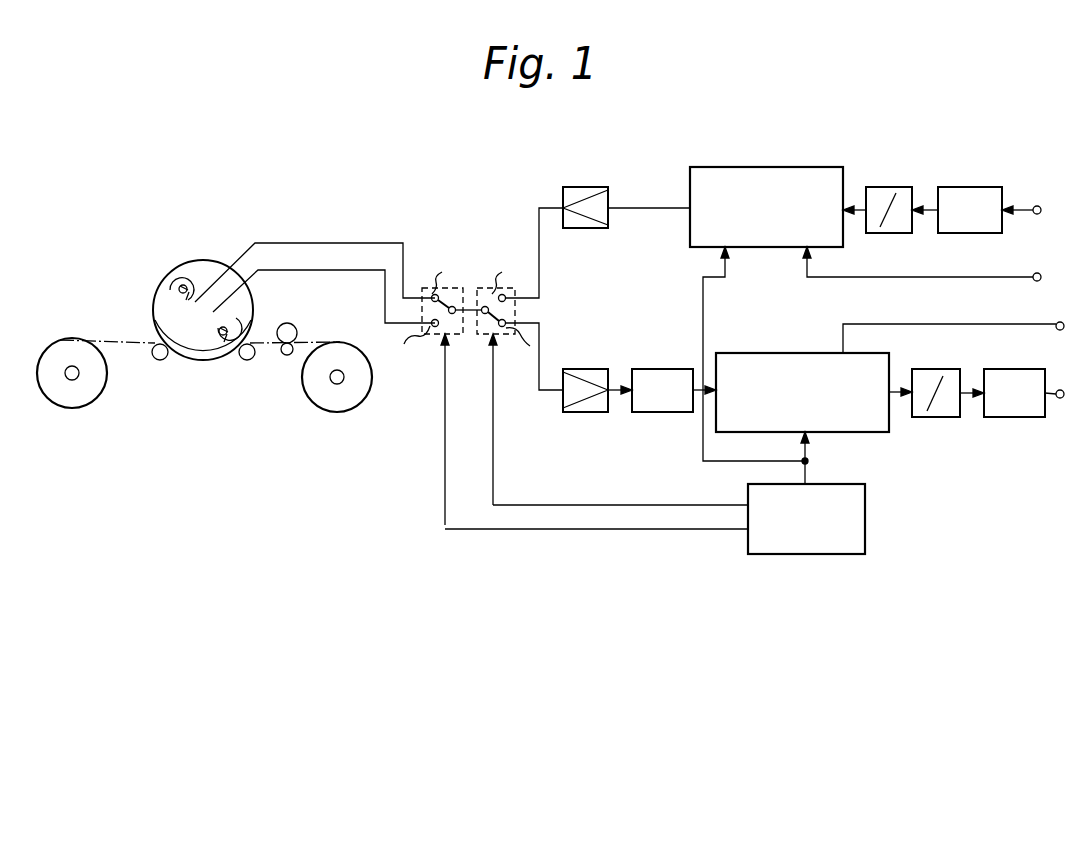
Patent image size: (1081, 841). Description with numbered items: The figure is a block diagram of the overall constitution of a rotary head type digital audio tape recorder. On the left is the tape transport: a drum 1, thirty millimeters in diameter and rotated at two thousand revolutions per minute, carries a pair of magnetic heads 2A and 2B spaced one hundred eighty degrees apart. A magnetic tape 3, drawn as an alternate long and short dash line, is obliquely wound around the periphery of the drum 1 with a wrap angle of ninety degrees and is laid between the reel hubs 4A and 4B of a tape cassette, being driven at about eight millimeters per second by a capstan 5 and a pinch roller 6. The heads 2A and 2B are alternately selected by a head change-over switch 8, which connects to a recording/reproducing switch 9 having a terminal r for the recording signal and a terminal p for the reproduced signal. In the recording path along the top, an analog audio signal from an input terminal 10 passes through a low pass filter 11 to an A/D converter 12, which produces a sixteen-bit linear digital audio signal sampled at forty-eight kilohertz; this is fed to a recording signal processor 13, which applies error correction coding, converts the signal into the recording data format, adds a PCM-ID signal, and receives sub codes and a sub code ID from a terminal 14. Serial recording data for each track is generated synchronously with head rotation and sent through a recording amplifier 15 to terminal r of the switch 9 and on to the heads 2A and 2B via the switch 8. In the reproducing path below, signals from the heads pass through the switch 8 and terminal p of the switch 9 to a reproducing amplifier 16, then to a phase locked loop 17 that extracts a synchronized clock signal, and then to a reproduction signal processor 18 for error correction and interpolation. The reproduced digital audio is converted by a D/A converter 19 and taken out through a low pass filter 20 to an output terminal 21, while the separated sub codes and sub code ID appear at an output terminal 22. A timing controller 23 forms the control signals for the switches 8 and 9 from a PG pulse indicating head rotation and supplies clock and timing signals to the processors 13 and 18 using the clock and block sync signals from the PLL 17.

The drum 1 is at (154, 309).
The magnetic head 2A is at (222, 355).
The magnetic head 2B is at (180, 275).
The magnetic tape 3 is at (120, 345).
The reel hub 4A is at (84, 407).
The reel hub 4B is at (333, 411).
The capstan 5 is at (285, 356).
The pinch roller 6 is at (290, 327).
The head change-over switch 8 is at (436, 336).
The recording/reproducing switch 9 is at (499, 336).
The input terminal 10 is at (1032, 206).
The low pass filter 11 is at (982, 234).
The A/D converter 12 is at (904, 234).
The recording signal processor 13 is at (843, 247).
The terminal 14 is at (1034, 275).
The recording amplifier 15 is at (583, 229).
The reproducing amplifier 16 is at (585, 413).
The phase locked loop 17 is at (663, 413).
The reproduction signal processor 18 is at (855, 434).
The D/A converter 19 is at (938, 418).
The low pass filter 20 is at (1016, 418).
The output terminal 21 is at (1060, 398).
The output terminal 22 is at (1060, 323).
The timing controller 23 is at (865, 530).